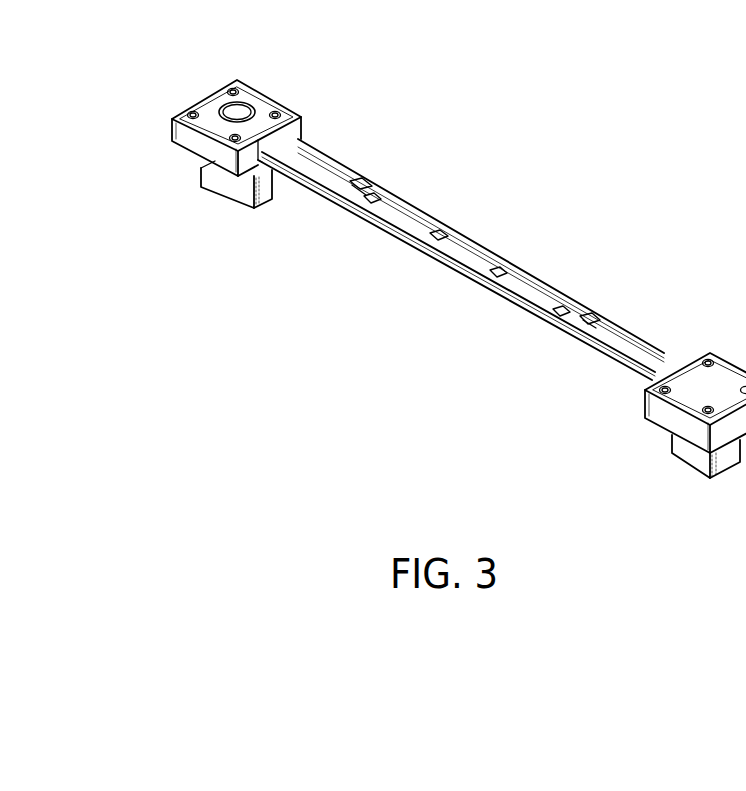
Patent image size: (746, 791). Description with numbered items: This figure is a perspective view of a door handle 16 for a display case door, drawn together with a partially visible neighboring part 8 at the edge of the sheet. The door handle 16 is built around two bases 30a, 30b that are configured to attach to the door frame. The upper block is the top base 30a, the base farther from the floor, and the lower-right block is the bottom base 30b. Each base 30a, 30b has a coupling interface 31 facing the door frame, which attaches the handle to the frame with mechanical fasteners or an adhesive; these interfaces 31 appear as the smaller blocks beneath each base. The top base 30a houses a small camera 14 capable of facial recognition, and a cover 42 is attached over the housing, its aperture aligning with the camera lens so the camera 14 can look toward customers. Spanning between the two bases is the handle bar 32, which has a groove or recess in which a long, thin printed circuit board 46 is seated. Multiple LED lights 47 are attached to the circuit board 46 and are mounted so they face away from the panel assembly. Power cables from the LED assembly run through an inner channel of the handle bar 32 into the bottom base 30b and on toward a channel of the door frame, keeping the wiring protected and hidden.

The system 8 is at (741, 194).
The camera 14 is at (243, 110).
The door handle 16 is at (527, 128).
The top base 30a is at (206, 109).
The bottom base 30b is at (668, 426).
The coupling interface 31 is at (258, 210).
The handle bar 32 is at (515, 302).
The cover 42 is at (272, 108).
The printed circuit board 46 is at (385, 209).
The LED lights 47 is at (442, 230).